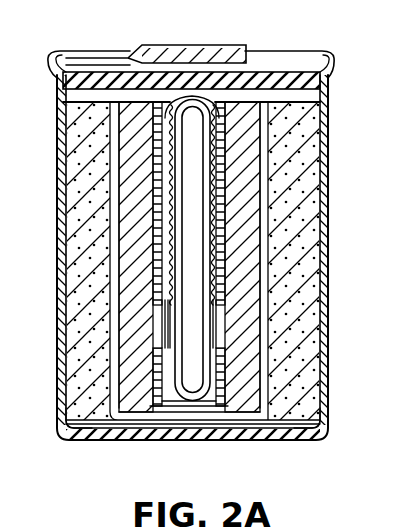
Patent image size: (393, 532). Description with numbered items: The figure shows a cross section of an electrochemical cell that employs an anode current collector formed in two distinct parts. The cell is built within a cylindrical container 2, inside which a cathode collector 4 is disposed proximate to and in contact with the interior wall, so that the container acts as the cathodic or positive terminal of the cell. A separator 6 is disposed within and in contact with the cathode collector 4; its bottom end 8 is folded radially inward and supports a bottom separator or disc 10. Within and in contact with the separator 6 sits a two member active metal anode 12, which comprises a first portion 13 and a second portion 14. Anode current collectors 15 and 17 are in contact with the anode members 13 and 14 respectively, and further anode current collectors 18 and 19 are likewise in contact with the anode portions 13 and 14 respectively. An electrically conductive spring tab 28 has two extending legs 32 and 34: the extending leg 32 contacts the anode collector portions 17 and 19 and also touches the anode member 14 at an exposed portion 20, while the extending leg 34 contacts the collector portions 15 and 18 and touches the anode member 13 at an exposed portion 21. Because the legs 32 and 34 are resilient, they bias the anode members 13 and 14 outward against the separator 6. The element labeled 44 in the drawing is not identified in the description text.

The cylindrical container 2 is at (324, 373).
The cathode collector 4 is at (322, 404).
The separator 6 is at (264, 194).
The bottom end 8 is at (148, 425).
The bottom separator or disc 10 is at (208, 437).
The two member active metal anode 12 is at (259, 162).
The first portion 13 is at (132, 251).
The second portion 14 is at (262, 230).
The anode current collector 15 is at (158, 320).
The anode current collector 17 is at (232, 266).
The anode current collector 18 is at (63, 431).
The anode current collector 19 is at (307, 436).
The exposed portion 20 is at (216, 331).
The exposed portion 21 is at (156, 326).
The electrically conductive spring tab 28 is at (236, 75).
The extending leg 32 is at (222, 280).
The extending leg 34 is at (118, 164).
The gasket 44 is at (326, 88).